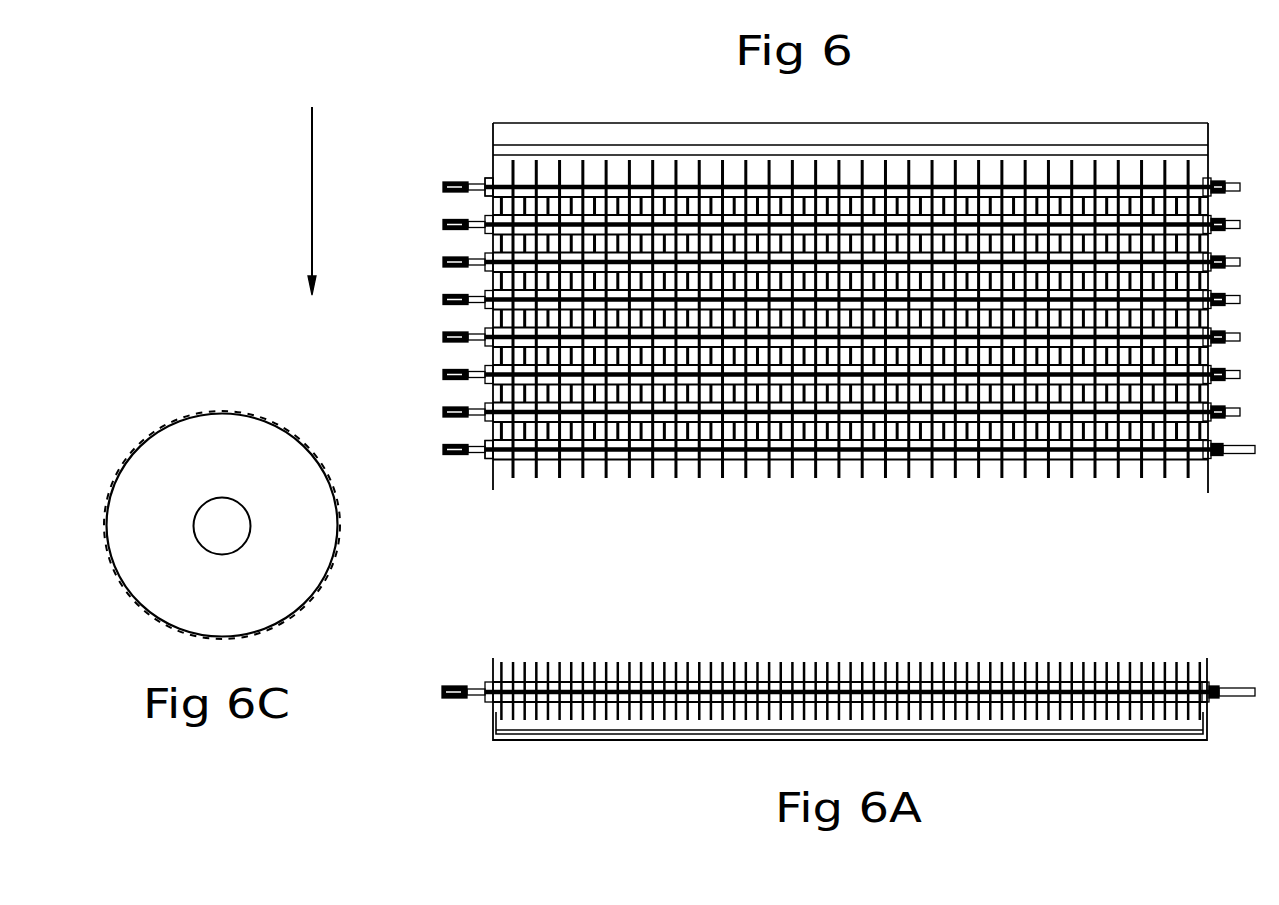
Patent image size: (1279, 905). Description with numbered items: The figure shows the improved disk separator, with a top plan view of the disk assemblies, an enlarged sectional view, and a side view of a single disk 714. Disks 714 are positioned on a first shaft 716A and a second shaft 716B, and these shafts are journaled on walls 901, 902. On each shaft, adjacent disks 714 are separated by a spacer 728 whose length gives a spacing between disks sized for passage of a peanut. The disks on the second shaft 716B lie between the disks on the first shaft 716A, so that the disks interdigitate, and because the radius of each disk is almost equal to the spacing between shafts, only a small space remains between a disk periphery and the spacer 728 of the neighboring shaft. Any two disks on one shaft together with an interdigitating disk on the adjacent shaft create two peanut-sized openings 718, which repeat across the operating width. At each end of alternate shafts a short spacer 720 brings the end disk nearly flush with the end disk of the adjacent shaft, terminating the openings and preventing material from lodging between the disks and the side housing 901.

In FIG. 6, the disk 714 is at (618, 463).
In FIG. 6A, the disk 714 is at (680, 662).
In FIG. 6C, the disk 714 is at (306, 543).
In FIG. 6, the first shaft 716A is at (443, 187).
In FIG. 6, the second shaft 716B is at (443, 224).
In FIG. 6, the peanut-sized opening 718 is at (1045, 467).
In FIG. 6A, the peanut-sized opening 718 is at (808, 666).
In FIG. 6, the short spacer 720 is at (497, 455).
In FIG. 6A, the short spacer 720 is at (497, 682).
In FIG. 6, the spacer 728 is at (920, 462).
In FIG. 6, the wall 901 is at (1210, 468).
In FIG. 6A, the wall 901 is at (1203, 662).
In FIG. 6, the wall 902 is at (492, 477).
In FIG. 6A, the wall 902 is at (491, 662).